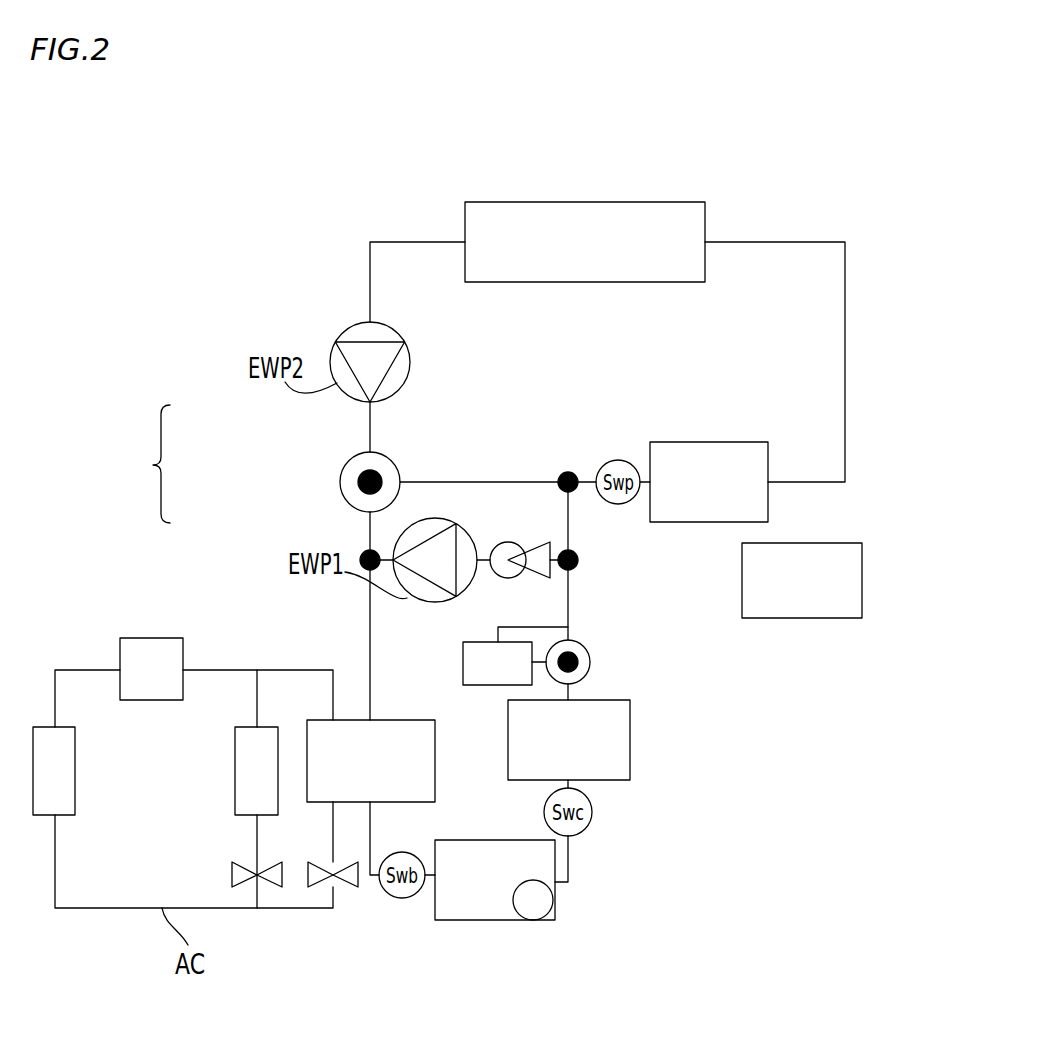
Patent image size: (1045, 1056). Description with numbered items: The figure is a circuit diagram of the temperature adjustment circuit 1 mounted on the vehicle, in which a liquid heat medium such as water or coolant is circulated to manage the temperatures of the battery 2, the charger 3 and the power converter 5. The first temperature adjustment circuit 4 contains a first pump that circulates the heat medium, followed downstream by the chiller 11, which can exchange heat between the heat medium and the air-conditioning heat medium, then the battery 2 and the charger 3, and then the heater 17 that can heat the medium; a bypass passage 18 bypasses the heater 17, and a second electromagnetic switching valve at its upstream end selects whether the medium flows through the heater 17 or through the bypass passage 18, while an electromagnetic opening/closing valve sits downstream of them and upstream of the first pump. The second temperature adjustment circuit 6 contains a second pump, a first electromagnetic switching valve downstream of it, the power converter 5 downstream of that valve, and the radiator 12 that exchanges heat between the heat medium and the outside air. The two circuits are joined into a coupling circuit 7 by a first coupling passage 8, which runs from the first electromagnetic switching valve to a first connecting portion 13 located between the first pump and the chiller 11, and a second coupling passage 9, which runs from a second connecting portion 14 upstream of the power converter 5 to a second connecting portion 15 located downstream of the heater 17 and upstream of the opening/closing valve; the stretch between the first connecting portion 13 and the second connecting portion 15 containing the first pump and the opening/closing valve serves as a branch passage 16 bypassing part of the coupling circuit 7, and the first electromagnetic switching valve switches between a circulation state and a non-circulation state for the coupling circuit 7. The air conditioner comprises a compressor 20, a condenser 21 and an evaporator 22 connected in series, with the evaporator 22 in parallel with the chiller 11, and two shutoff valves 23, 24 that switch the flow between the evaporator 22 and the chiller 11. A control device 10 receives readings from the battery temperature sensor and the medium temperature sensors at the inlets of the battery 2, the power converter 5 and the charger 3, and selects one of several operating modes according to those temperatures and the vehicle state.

The temperature adjustment circuit 1 is at (784, 177).
The battery 2 is at (468, 921).
The charger 3 is at (617, 732).
The first temperature adjustment circuit 4 is at (370, 645).
The power converter 5 is at (649, 462).
The second temperature adjustment circuit 6 is at (370, 282).
The coupling circuit 7 is at (150, 464).
The first coupling passage 8 is at (366, 519).
The second coupling passage 9 is at (569, 525).
The control device 10 is at (863, 583).
The chiller 11 is at (405, 720).
The radiator 12 is at (618, 202).
The first connecting portion 13 is at (363, 555).
The second connecting portion 14 is at (558, 474).
The second connecting portion 15 is at (578, 567).
The branch passage 16 is at (492, 542).
The heater 17 is at (468, 688).
The bypass passage 18 is at (573, 640).
The compressor 20 is at (152, 638).
The condenser 21 is at (76, 765).
The evaporator 22 is at (234, 770).
The shutoff valve 23 is at (231, 872).
The shutoff valve 24 is at (347, 885).